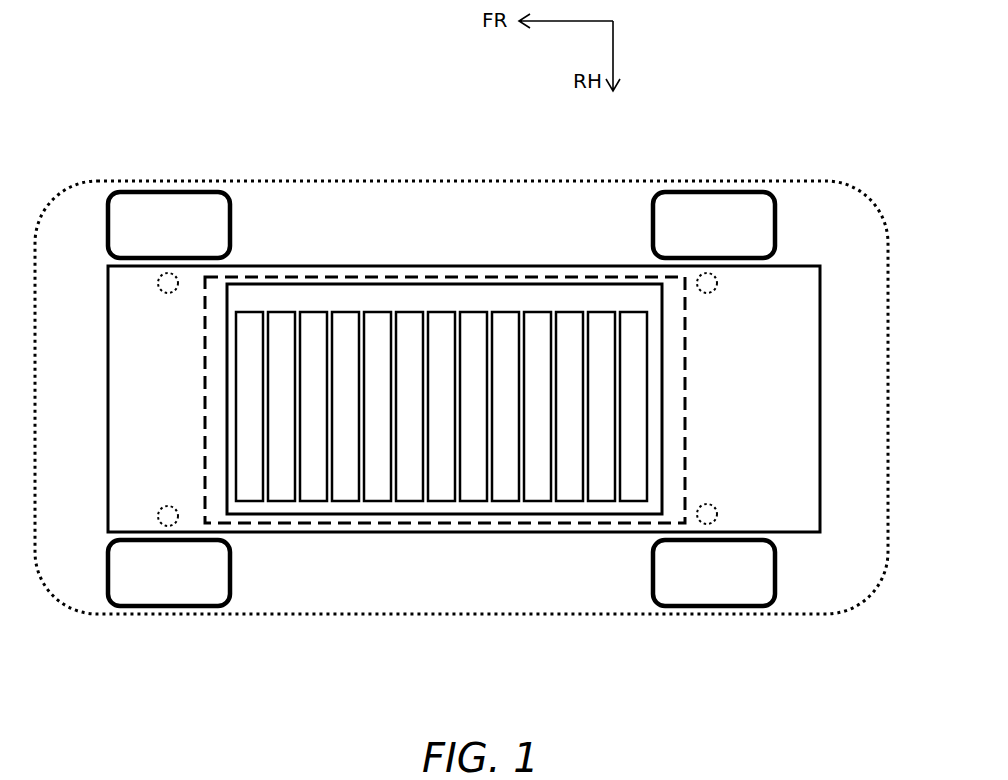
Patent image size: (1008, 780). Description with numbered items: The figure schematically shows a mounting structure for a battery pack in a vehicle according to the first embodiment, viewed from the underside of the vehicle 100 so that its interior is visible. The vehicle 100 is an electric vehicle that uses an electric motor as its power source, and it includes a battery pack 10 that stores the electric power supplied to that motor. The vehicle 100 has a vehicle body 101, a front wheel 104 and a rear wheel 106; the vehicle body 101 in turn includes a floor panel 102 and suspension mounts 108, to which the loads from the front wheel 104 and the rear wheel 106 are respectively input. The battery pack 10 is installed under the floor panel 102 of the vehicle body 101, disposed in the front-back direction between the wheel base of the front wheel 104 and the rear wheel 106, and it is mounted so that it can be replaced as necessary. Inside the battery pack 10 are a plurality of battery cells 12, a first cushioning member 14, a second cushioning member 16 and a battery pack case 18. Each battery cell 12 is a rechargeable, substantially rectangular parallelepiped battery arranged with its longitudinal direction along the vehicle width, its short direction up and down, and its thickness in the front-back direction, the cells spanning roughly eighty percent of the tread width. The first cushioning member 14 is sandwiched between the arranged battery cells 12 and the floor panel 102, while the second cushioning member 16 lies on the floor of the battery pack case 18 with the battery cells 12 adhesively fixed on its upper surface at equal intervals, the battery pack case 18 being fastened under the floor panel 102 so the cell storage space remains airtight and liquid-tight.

The vehicle 100 is at (744, 90).
The vehicle body 101 is at (342, 615).
The floor panel 102 is at (445, 394).
The front wheel 104 is at (171, 210).
The rear wheel 106 is at (720, 210).
The suspension mounts 108 is at (168, 273).
The battery pack 10 is at (558, 543).
The battery cell 12 is at (248, 320).
The first cushioning member 14 is at (483, 300).
The second cushioning member 16 is at (444, 315).
The battery pack case 18 is at (467, 523).